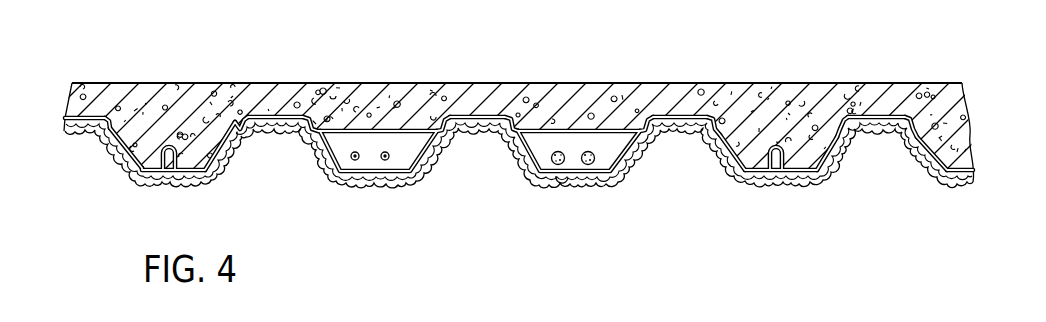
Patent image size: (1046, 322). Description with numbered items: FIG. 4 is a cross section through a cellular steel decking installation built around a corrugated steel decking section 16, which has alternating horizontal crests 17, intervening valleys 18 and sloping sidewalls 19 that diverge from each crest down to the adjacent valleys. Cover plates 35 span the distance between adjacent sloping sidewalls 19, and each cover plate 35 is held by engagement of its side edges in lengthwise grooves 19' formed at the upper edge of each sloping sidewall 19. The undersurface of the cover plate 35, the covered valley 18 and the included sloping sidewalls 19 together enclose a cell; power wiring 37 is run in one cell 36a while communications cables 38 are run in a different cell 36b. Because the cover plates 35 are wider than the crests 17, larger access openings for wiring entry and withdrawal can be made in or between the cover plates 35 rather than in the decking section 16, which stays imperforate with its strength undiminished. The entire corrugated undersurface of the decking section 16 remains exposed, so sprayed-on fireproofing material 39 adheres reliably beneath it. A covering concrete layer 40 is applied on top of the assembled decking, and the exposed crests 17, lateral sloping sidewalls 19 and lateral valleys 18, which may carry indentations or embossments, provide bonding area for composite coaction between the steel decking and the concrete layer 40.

The corrugated steel decking section 16 is at (249, 170).
The crest 17 is at (278, 117).
The valley 18 is at (378, 173).
The sloping sidewall 19 is at (528, 152).
The lengthwise groove 19' is at (511, 154).
The cover plate 35 is at (383, 131).
The cell 36a is at (336, 178).
The cell 36b is at (530, 172).
The power wiring 37 is at (360, 152).
The communications cables 38 is at (600, 166).
The sprayed-on fireproofing material 39 is at (571, 176).
The concrete layer 40 is at (170, 90).